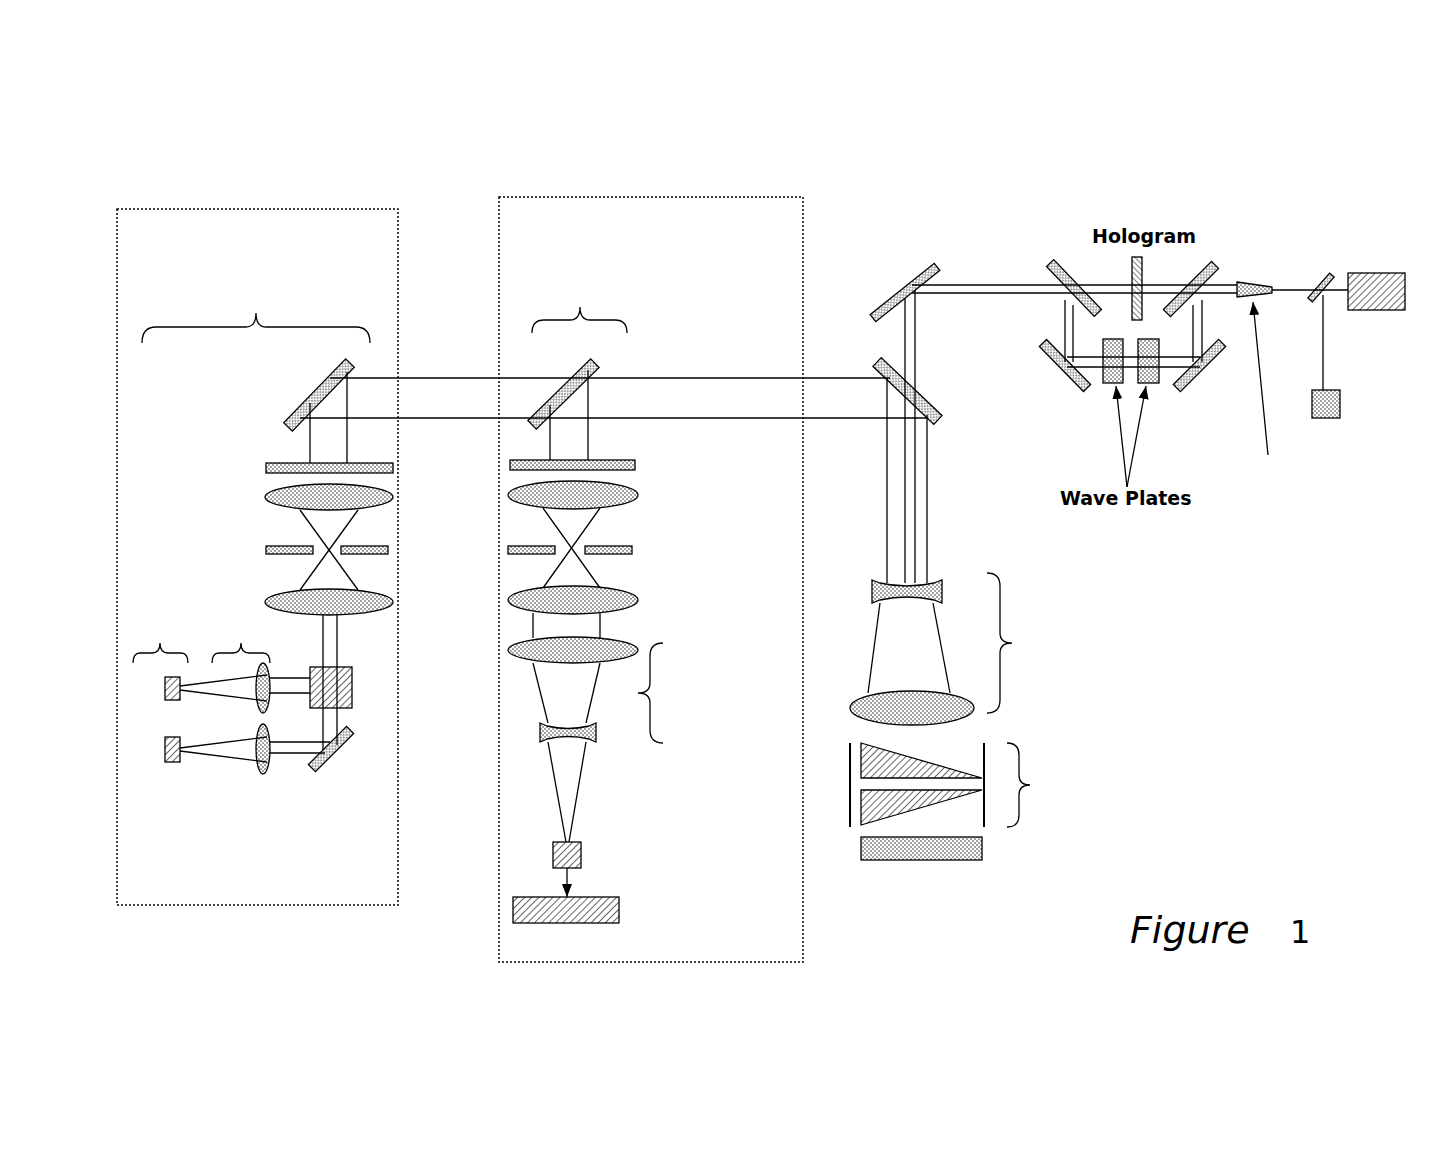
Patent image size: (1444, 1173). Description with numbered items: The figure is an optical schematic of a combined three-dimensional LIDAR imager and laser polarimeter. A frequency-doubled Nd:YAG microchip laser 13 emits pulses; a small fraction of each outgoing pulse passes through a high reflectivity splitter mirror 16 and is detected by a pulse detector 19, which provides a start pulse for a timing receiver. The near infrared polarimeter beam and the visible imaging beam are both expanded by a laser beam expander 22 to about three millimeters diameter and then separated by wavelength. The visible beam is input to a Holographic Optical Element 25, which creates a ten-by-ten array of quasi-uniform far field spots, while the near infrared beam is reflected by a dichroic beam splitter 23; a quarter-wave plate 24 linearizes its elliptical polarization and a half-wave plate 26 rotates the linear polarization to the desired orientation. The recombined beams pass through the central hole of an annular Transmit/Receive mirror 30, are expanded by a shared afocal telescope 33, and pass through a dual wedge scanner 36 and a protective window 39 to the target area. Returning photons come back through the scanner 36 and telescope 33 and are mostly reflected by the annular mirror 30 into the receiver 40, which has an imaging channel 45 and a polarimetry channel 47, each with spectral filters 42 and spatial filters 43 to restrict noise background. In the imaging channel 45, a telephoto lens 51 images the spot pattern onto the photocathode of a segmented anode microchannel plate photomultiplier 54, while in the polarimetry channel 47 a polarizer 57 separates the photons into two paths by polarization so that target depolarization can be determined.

The receiver 40 is at (418, 198).
The polarimetry channel (1064 nm leg) 47 is at (280, 270).
The imaging channel (532 nm leg) 45 is at (658, 254).
The spectral filters 42 is at (509, 466).
The spatial filters 43 is at (508, 551).
The polarizer 57 is at (352, 703).
The segmented anode microchannel plate photomultiplier 54 is at (553, 862).
The telephoto lens 51 is at (635, 672).
The annular Transmit/Receive mirror 30 is at (935, 420).
The shared afocal telescope 33 is at (967, 627).
The dual wedge scanner 36 is at (1032, 763).
The protective window 39 is at (988, 868).
The Holographic Optical Element (HOE) 25 is at (1100, 272).
The dichroic beam splitter 23 is at (1207, 266).
The laser beam expander 22 is at (1255, 281).
The high reflectivity splitter mirror 16 is at (1313, 277).
The frequency-doubled Nd:YAG microchip laser 13 is at (1348, 275).
The pulse detector 19 is at (1343, 382).
The half-wave plate 26 is at (1105, 383).
The quarter-wave plate 24 is at (1157, 383).